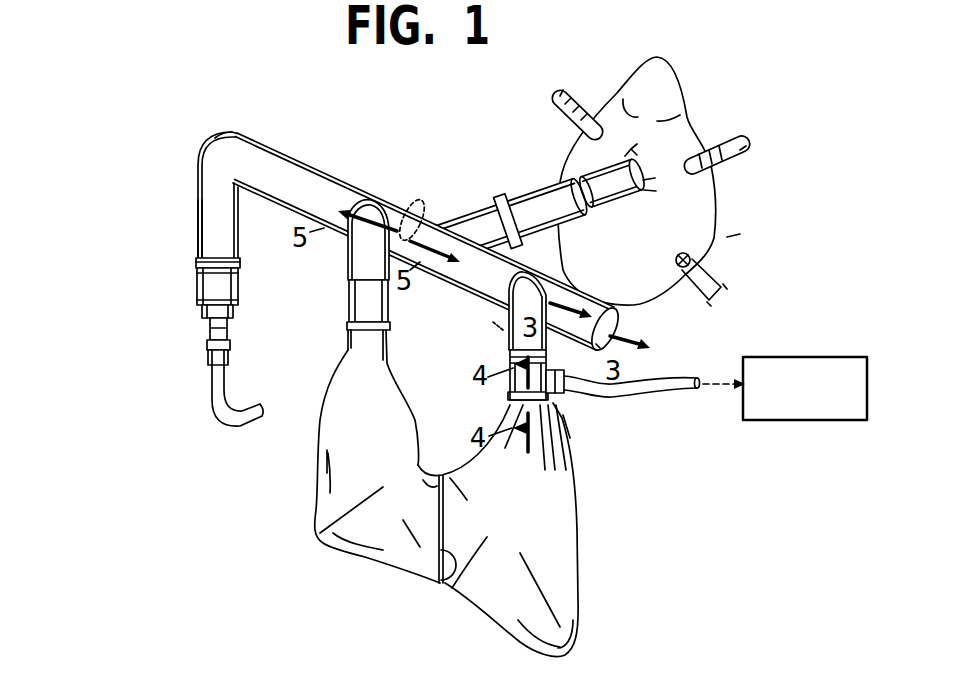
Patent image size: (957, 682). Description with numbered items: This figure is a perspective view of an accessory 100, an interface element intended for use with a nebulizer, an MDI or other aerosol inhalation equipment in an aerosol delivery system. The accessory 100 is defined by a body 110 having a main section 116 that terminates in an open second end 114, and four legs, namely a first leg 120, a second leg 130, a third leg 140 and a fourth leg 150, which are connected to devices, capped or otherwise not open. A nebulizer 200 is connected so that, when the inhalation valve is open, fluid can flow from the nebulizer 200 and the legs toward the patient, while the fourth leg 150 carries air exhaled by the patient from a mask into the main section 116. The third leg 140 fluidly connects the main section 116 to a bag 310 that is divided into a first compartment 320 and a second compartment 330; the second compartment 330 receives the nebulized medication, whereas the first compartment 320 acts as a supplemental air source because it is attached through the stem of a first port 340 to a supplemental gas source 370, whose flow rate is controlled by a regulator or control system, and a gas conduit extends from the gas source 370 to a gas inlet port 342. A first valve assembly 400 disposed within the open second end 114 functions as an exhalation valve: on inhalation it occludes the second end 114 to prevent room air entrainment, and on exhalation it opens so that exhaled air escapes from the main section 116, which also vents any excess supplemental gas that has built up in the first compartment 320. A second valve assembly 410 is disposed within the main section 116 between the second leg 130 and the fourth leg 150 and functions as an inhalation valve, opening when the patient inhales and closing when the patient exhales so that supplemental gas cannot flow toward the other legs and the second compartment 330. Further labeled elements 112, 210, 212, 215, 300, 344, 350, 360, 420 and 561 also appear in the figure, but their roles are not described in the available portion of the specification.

The accessory 100 is at (727, 237).
The body 110 is at (457, 225).
The first end of tube 112 is at (200, 217).
The second end 114 is at (607, 303).
The main section 116 is at (237, 146).
The first leg 120 is at (207, 185).
The second leg 130 is at (348, 262).
The third leg 140 is at (513, 333).
The fourth leg 150 is at (483, 210).
The nebulizer 200 is at (186, 328).
The valve body 210 is at (202, 282).
The coupling 212 is at (197, 258).
The exhaust tube 215 is at (213, 380).
The reservoir bag assembly 300 is at (436, 493).
The bag 310 is at (317, 537).
The first compartment 320 is at (560, 604).
The second compartment 330 is at (330, 456).
The first port 340 is at (512, 397).
The gas inlet port 342 is at (535, 452).
The gas supply line 344 is at (563, 397).
The bag neck connector 350 is at (360, 303).
The bag seam 360 is at (453, 586).
The gas source 370 is at (812, 422).
The first valve assembly 400 is at (627, 320).
The second valve assembly 410 is at (407, 217).
The opening 420 is at (497, 328).
The patient head 561 is at (672, 101).